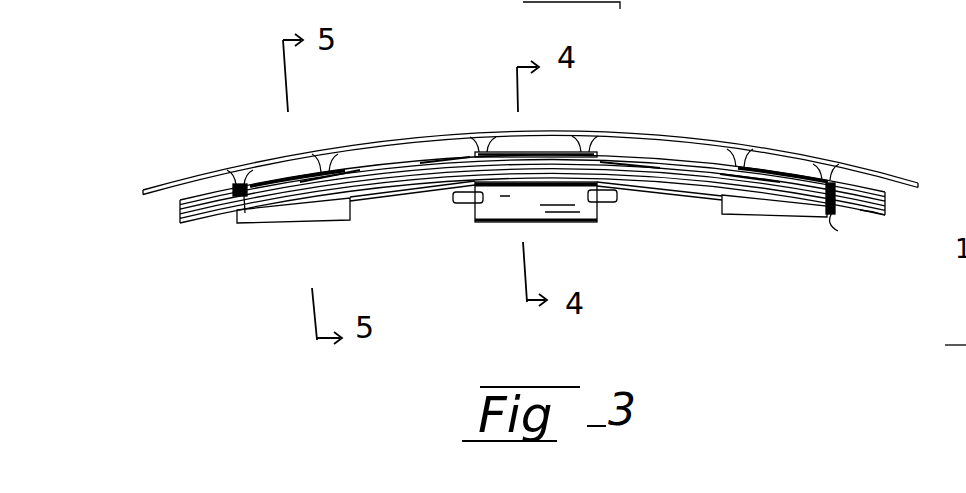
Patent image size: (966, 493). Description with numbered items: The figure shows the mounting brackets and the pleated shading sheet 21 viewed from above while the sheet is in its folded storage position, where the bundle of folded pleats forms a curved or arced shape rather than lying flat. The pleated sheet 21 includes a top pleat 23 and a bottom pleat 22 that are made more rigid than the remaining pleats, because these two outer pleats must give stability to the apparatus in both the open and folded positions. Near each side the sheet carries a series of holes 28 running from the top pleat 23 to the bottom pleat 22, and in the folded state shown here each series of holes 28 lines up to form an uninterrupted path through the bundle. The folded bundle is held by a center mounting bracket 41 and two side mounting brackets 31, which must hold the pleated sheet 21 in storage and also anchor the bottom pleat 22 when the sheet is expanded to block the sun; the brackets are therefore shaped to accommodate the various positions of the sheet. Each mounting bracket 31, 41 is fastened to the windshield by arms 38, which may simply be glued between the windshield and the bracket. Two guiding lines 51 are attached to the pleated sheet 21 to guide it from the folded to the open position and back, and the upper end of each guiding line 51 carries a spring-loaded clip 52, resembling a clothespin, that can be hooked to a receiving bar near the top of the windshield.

The pleated sheet 21 is at (893, 192).
The bottom pleat 22 is at (879, 181).
The top pleat 23 is at (884, 214).
The series of holes 28 is at (833, 214).
The side mounting bracket 31 is at (784, 168).
The fastening arm 38 is at (244, 172).
The center mounting bracket 41 is at (562, 229).
The guiding line 51 is at (680, 200).
The spring-loaded clip 52 is at (607, 203).